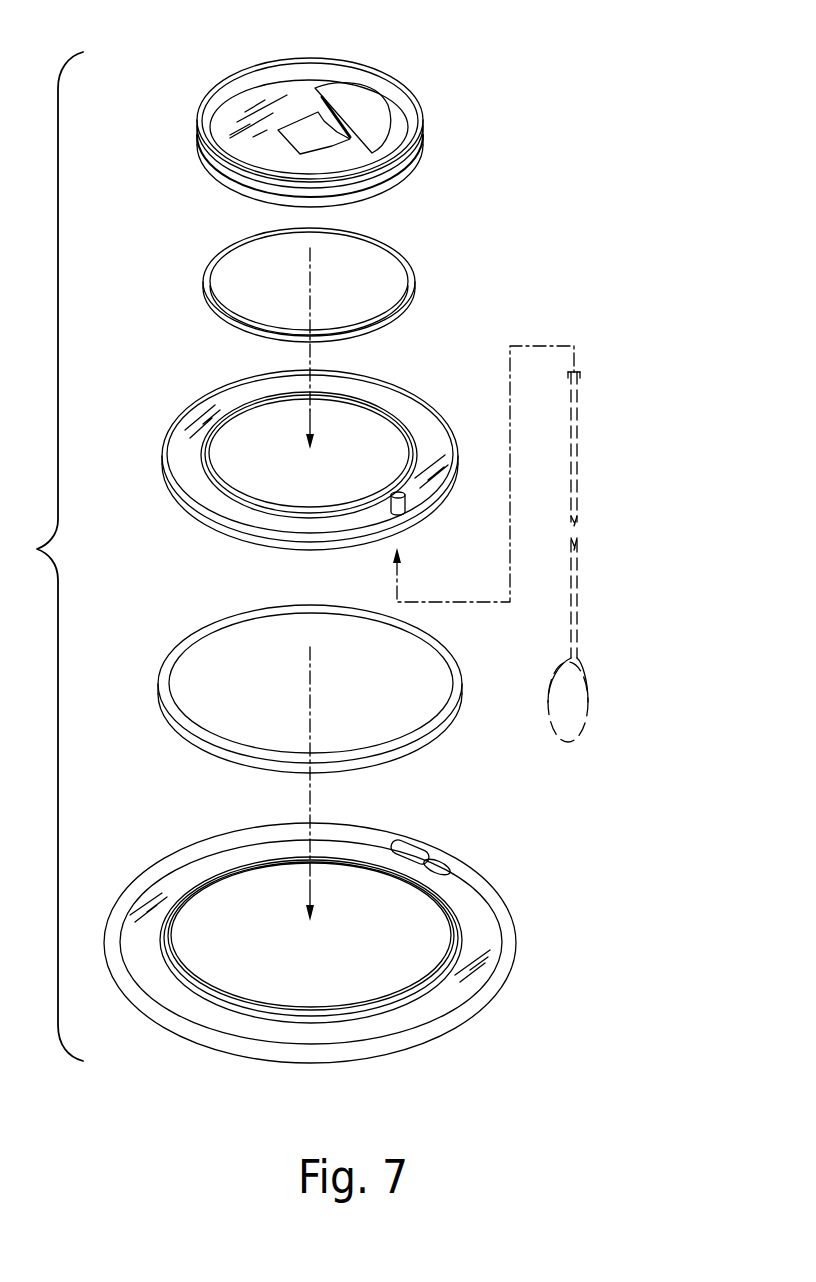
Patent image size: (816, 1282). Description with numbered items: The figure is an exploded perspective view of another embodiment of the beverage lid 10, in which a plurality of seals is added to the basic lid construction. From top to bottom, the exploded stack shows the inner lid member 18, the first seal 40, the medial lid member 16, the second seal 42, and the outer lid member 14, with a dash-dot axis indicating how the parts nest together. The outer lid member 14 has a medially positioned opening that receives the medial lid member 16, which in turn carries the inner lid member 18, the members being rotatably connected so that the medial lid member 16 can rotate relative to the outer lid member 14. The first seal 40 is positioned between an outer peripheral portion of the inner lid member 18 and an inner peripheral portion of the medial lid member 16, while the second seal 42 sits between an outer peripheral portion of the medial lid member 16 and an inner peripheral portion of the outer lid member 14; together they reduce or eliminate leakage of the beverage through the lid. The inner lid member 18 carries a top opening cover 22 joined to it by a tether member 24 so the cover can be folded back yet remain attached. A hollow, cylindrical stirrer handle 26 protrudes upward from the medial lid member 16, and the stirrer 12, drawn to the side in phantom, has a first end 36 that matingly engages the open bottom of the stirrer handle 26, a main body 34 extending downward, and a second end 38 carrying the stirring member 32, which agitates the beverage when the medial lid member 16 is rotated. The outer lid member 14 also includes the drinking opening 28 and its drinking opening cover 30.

The beverage lid 10 is at (626, 232).
The stirrer 12 is at (625, 535).
The outer lid member 14 is at (324, 953).
The medial lid member 16 is at (321, 450).
The inner lid member 18 is at (337, 111).
The top opening cover 22 is at (354, 110).
The tether member 24 is at (303, 133).
The stirrer handle 26 is at (406, 492).
The drinking opening 28 is at (450, 870).
The drinking opening cover 30 is at (423, 850).
The stirring member 32 is at (587, 682).
The main body 34 is at (577, 473).
The first end 36 is at (586, 365).
The second end 38 is at (605, 717).
The first seal 40 is at (402, 250).
The second seal 42 is at (415, 733).